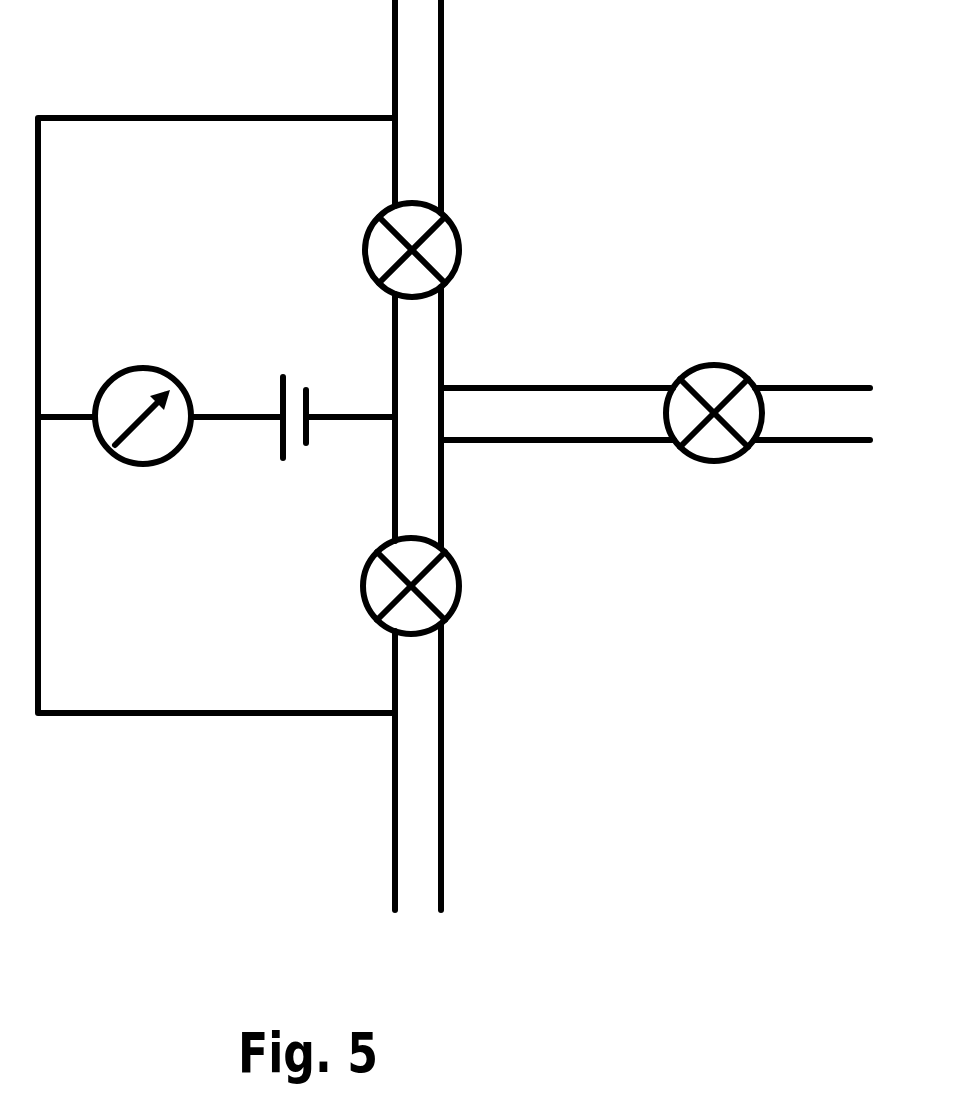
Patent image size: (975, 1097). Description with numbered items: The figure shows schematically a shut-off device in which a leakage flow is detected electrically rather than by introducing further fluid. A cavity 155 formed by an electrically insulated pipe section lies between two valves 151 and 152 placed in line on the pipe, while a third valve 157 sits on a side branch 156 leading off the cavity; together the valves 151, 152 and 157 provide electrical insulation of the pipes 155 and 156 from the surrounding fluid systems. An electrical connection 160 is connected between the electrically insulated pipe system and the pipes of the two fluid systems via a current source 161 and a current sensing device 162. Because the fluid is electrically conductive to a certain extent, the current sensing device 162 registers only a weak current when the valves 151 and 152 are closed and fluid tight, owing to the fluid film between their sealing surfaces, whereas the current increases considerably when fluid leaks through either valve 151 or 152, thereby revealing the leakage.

The valve 151 is at (462, 227).
The valve 152 is at (462, 592).
The cavity 155 is at (443, 490).
The branch pipe 156 is at (543, 388).
The valve 157 is at (725, 362).
The electrical connection 160 is at (357, 418).
The current source 161 is at (297, 383).
The current sensing device 162 is at (143, 465).